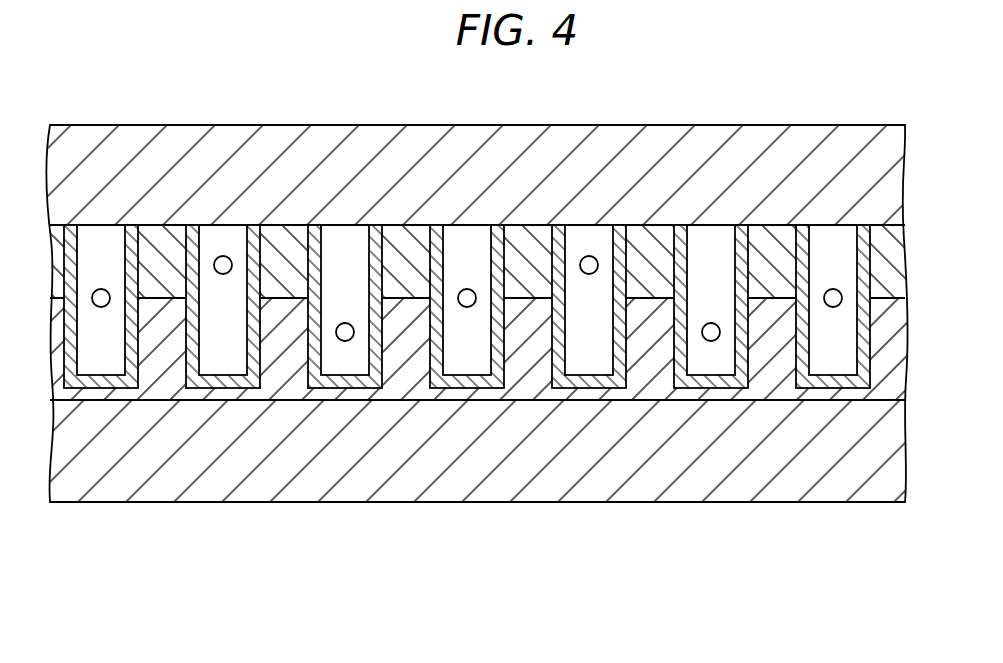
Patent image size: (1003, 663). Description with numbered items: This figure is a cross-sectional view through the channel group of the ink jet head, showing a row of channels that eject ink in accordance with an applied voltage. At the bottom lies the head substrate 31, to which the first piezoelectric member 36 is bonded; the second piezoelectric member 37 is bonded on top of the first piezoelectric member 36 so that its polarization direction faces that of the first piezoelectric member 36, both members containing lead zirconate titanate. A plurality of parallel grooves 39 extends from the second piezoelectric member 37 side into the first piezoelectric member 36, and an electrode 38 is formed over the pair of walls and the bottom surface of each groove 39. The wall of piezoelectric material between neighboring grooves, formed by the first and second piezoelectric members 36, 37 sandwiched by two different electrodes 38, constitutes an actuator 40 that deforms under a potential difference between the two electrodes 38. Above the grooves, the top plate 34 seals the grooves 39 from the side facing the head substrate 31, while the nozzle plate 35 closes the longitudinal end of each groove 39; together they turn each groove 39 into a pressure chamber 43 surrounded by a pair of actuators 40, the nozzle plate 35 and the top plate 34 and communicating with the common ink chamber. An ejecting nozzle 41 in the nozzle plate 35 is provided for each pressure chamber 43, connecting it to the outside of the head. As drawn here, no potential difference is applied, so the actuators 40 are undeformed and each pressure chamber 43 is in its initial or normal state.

The head substrate 31 is at (890, 430).
The top plate 34 is at (890, 138).
The nozzle plate 35 is at (837, 253).
The first piezoelectric member 36 is at (884, 340).
The second piezoelectric member 37 is at (890, 270).
The electrode 38 is at (561, 255).
The groove 39 is at (600, 387).
The actuator 40 is at (408, 303).
The ejecting nozzle 41 is at (833, 307).
The pressure chamber 43 is at (695, 307).